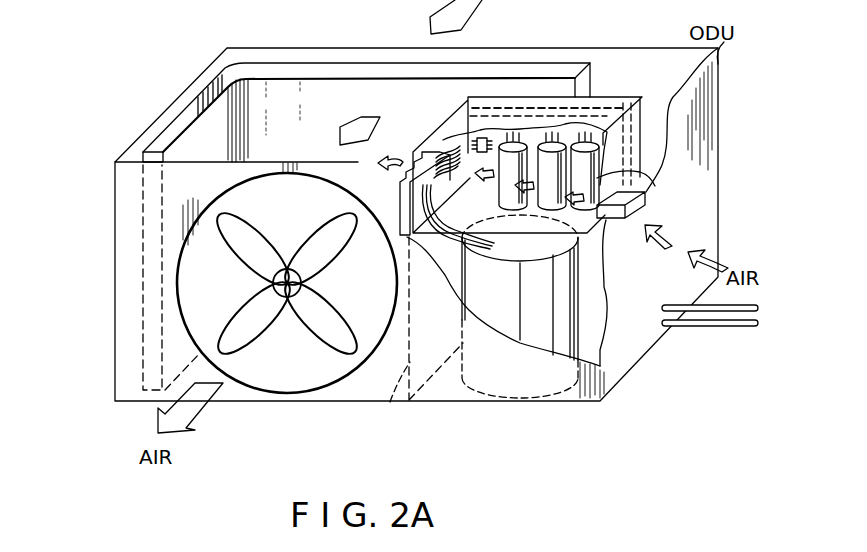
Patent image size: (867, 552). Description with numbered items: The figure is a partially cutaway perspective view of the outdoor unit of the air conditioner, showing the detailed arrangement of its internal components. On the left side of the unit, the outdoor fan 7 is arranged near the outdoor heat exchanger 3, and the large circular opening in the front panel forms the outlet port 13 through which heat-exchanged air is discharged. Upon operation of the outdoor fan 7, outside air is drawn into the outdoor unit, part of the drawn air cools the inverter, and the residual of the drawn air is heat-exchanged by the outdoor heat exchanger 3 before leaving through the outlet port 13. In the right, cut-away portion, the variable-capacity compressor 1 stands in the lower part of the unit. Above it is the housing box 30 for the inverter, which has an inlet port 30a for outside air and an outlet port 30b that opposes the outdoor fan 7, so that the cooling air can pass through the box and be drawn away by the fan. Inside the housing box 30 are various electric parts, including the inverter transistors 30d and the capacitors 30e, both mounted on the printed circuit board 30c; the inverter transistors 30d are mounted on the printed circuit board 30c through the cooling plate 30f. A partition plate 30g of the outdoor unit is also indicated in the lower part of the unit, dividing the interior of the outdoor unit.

The variable-capacity compressor 1 is at (566, 307).
The outdoor heat exchanger 3 is at (218, 118).
The outdoor fan 7 is at (238, 250).
The outlet port 13 is at (227, 193).
The housing box 30 is at (645, 110).
The inlet port 30a is at (615, 218).
The outlet port 30b is at (447, 145).
The printed circuit board 30c is at (557, 108).
The inverter transistors 30d is at (452, 150).
The capacitors 30e is at (645, 185).
The cooling plate 30f is at (390, 197).
The partition plate 30g is at (391, 402).